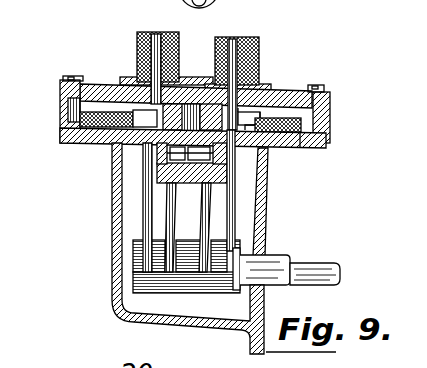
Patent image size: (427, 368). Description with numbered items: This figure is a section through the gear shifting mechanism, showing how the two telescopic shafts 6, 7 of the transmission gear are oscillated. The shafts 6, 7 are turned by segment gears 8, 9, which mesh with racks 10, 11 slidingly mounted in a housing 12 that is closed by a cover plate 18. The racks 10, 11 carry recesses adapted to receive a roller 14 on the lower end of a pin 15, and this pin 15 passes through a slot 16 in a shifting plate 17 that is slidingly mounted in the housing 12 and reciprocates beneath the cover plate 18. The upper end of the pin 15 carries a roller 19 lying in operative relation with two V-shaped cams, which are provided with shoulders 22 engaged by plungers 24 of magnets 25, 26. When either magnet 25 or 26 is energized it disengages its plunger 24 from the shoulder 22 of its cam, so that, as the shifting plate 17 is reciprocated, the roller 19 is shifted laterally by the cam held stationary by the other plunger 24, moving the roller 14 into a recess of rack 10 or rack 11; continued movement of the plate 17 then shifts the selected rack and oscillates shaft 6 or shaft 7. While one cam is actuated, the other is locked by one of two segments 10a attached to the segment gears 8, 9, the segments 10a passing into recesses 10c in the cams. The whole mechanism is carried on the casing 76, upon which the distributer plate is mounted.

The telescopic shaft 6 is at (320, 268).
The telescopic shaft 7 is at (275, 260).
The segment gear 8 is at (60, 130).
The segment gear 9 is at (207, 214).
The rack 10 is at (150, 170).
The segment 10a is at (147, 228).
The recess 10c is at (332, 96).
The rack 11 is at (267, 171).
The housing 12 is at (81, 144).
The roller 14 is at (272, 160).
The pin 15 is at (150, 155).
The slot 16 is at (300, 148).
The shifting plate 17 is at (62, 88).
The cover plate 18 is at (302, 89).
The roller 19 is at (199, 86).
The shoulder 22 is at (132, 113).
The plunger 24 is at (138, 38).
The magnet 25 is at (137, 55).
The magnet 26 is at (260, 57).
The casing 76 is at (111, 296).